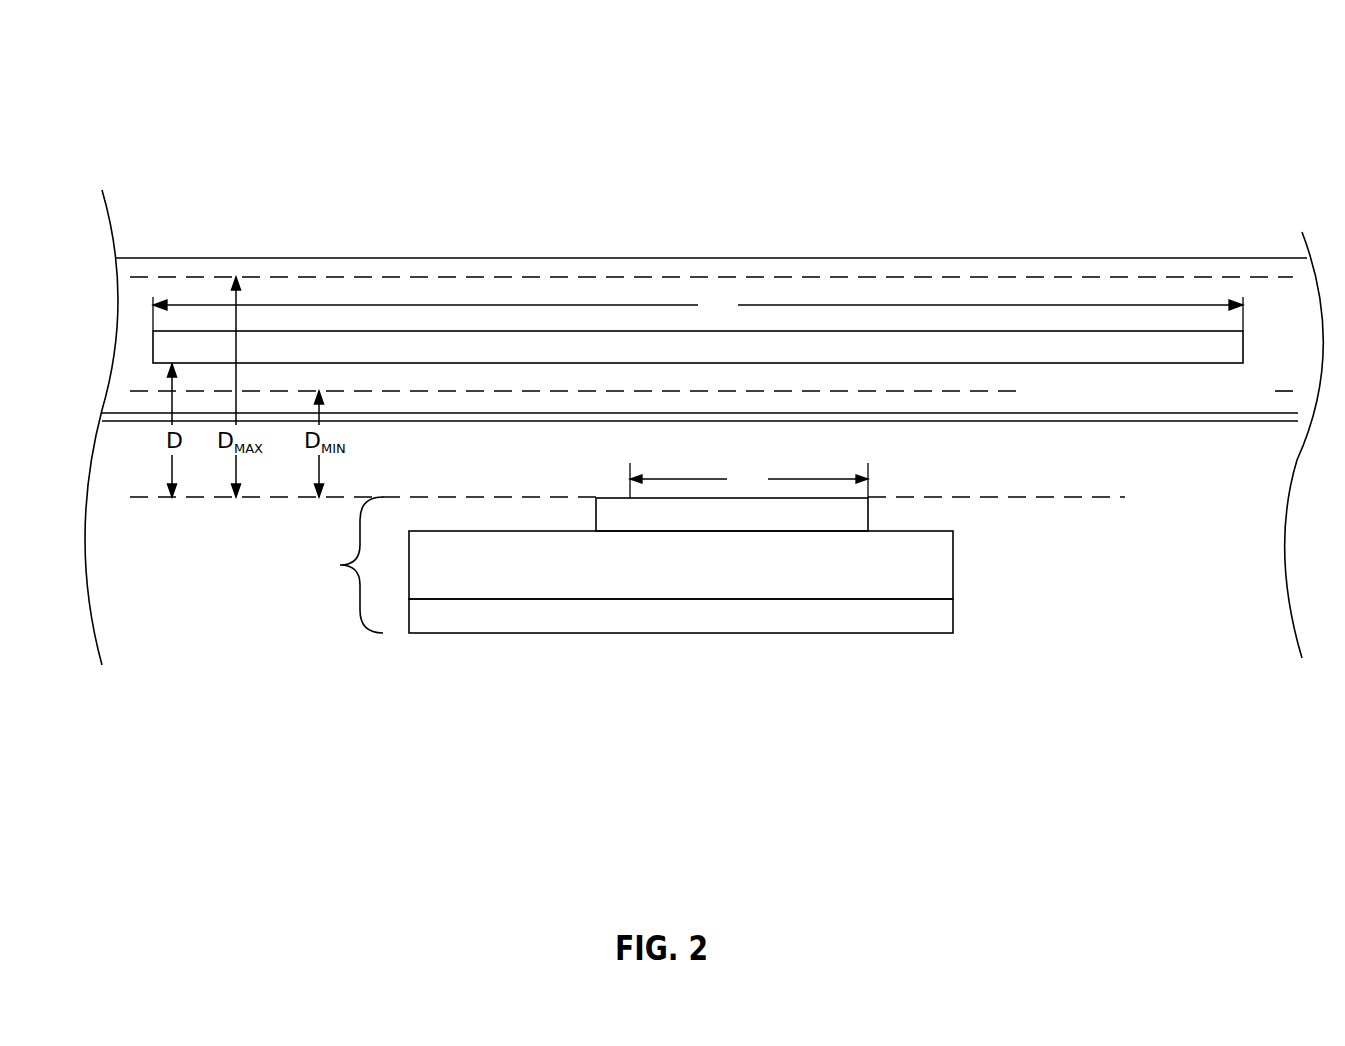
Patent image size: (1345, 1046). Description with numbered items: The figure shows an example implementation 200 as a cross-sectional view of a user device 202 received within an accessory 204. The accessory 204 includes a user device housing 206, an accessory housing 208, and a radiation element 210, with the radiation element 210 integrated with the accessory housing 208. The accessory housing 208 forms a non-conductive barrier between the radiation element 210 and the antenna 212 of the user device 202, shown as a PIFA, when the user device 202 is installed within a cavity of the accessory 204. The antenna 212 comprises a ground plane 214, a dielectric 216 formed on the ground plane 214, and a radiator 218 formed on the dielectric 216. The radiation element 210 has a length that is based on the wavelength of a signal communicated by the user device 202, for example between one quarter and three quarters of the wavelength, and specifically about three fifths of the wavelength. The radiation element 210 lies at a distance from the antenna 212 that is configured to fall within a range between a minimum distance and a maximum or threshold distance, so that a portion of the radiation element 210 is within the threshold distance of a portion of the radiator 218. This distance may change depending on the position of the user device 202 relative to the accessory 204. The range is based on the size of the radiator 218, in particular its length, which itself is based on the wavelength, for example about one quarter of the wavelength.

The example implementation 200 is at (197, 70).
The user device 202 is at (518, 730).
The accessory 204 is at (595, 218).
The user device housing 206 is at (1287, 473).
The accessory housing 208 is at (1263, 401).
The radiation element 210 is at (843, 359).
The antenna 212 is at (596, 548).
The ground plane 214 is at (773, 628).
The dielectric 216 is at (750, 577).
The radiator 218 is at (797, 526).